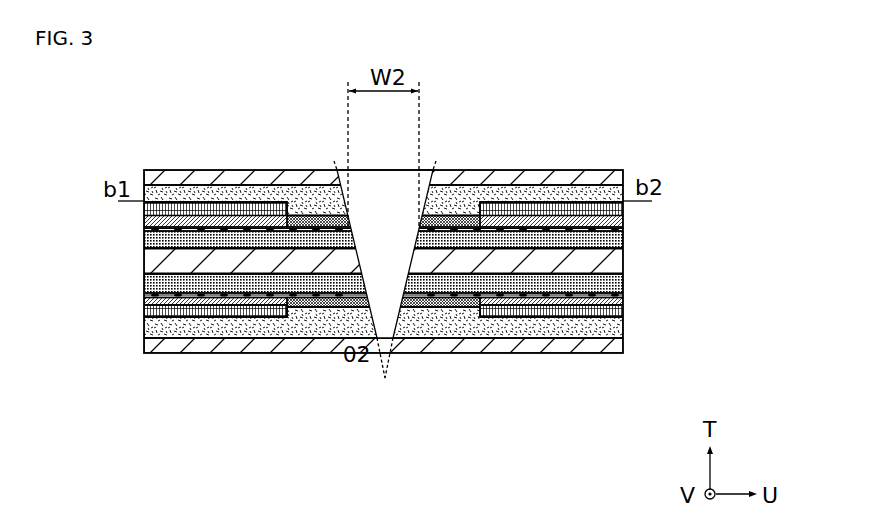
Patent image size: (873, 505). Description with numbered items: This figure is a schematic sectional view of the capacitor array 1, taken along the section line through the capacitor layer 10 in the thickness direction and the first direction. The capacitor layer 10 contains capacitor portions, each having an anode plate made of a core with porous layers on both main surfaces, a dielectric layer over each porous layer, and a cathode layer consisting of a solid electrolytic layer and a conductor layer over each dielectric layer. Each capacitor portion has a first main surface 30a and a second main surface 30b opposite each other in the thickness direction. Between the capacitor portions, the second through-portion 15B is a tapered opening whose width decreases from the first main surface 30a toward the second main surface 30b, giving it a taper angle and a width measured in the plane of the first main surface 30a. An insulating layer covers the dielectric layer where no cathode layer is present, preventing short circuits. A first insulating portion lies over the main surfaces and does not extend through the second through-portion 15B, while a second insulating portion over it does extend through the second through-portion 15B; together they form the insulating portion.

The capacitor array 1 is at (690, 127).
The capacitor layer 10 is at (98, 167).
The second through-portion 15B is at (398, 250).
The first main surface 30a is at (255, 202).
The second main surface 30b is at (255, 317).